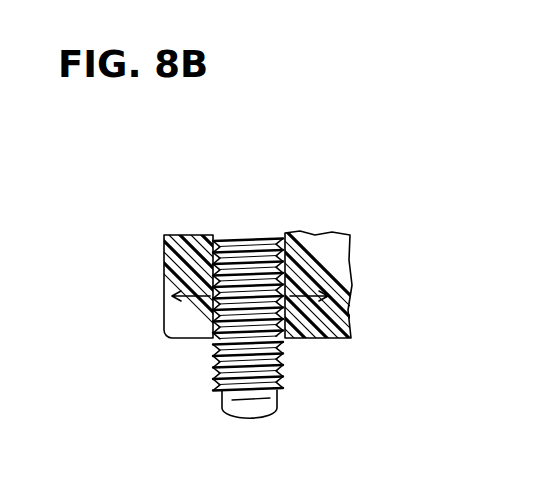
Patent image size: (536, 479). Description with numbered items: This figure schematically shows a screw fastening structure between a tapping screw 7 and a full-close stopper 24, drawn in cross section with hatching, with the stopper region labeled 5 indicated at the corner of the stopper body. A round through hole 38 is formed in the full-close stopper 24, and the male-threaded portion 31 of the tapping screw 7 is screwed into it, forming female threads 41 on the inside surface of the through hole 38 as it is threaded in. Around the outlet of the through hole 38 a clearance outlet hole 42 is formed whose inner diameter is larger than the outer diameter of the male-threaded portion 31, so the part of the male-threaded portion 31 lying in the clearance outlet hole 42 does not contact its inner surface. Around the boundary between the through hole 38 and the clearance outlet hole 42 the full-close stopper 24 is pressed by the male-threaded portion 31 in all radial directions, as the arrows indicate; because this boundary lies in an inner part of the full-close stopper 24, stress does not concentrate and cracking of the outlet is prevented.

The fixing member 5 is at (161, 237).
The tapping screw 7 is at (245, 309).
The full-close stopper 24 is at (335, 257).
The male-threaded portion 31 is at (262, 238).
The through hole 38 is at (217, 268).
The female threads 41 is at (216, 240).
The clearance outlet hole 42 is at (288, 333).